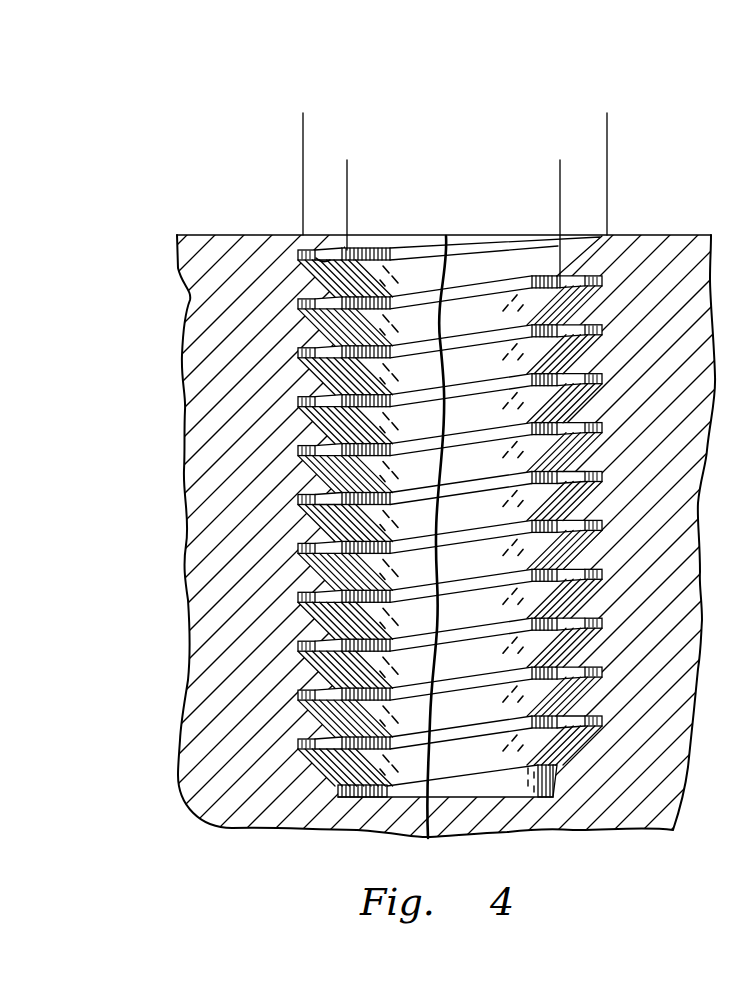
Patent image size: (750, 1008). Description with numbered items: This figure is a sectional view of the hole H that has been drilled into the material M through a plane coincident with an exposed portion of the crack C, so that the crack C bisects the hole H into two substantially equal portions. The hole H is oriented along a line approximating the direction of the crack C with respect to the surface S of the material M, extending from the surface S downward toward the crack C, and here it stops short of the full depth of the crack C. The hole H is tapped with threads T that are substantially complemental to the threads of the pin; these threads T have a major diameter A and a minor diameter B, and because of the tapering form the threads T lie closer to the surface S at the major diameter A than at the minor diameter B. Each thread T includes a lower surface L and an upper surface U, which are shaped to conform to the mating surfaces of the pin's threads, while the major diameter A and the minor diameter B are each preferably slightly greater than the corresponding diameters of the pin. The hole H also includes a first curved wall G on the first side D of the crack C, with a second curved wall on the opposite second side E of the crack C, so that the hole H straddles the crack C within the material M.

The hole H is at (370, 104).
The major diameter A is at (607, 123).
The minor diameter B is at (560, 168).
The crack C is at (447, 237).
The surface S is at (645, 236).
The lower surface L is at (300, 252).
The upper surface U is at (307, 253).
The first curved wall G is at (352, 247).
The material M is at (226, 303).
The first side D is at (258, 468).
The second side E is at (666, 388).
The threads T is at (318, 432).